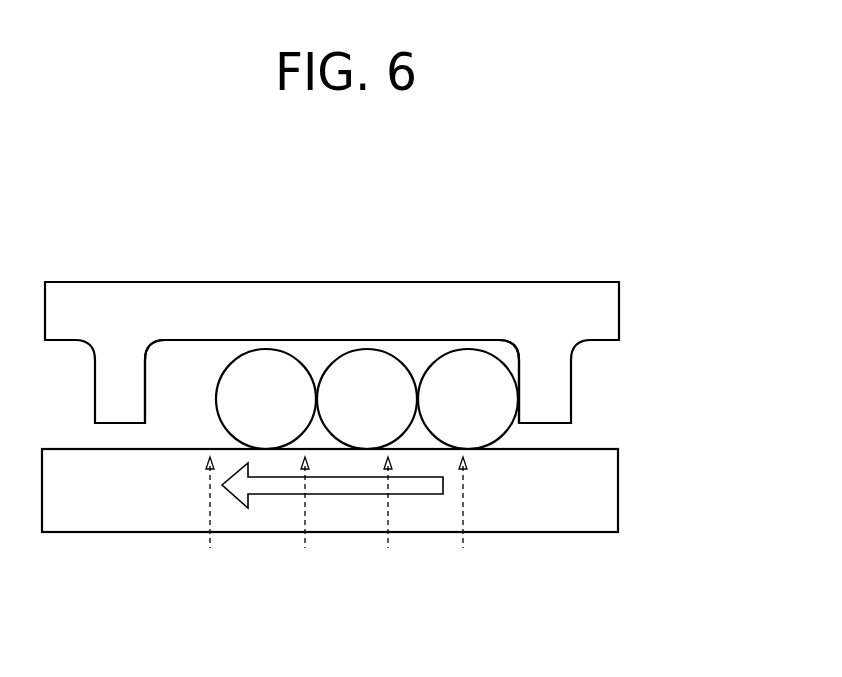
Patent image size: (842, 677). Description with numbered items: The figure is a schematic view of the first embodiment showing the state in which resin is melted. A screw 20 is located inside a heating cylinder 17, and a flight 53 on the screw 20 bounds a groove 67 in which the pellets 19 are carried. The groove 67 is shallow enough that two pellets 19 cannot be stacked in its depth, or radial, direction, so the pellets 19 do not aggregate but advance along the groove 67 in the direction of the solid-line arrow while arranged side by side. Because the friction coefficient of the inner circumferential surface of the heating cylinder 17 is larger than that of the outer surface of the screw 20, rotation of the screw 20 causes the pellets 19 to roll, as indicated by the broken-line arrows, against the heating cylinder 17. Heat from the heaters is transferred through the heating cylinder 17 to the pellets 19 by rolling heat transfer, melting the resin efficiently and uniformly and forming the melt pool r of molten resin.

The heating cylinder 17 is at (597, 501).
The pellets 19 is at (265, 373).
The screw 20 is at (378, 407).
The flight 53 is at (550, 379).
The groove 67 is at (176, 367).
The melt pool r is at (172, 413).